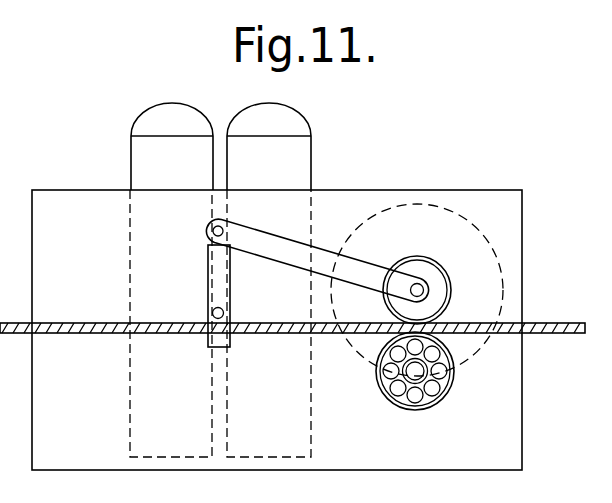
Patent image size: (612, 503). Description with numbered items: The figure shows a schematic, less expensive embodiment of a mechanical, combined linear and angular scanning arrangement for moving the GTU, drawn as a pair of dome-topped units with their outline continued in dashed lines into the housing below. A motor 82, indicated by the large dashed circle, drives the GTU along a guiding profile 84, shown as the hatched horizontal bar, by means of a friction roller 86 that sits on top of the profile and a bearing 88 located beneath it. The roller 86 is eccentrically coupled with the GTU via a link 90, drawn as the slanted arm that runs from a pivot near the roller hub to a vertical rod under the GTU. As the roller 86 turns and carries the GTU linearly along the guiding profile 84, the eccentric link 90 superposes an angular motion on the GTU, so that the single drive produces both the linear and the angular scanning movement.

The motor 82 is at (483, 262).
The guiding profile 84 is at (552, 324).
The friction roller 86 is at (443, 270).
The bearing 88 is at (445, 392).
The link 90 is at (280, 250).
The element GTU is at (190, 92).